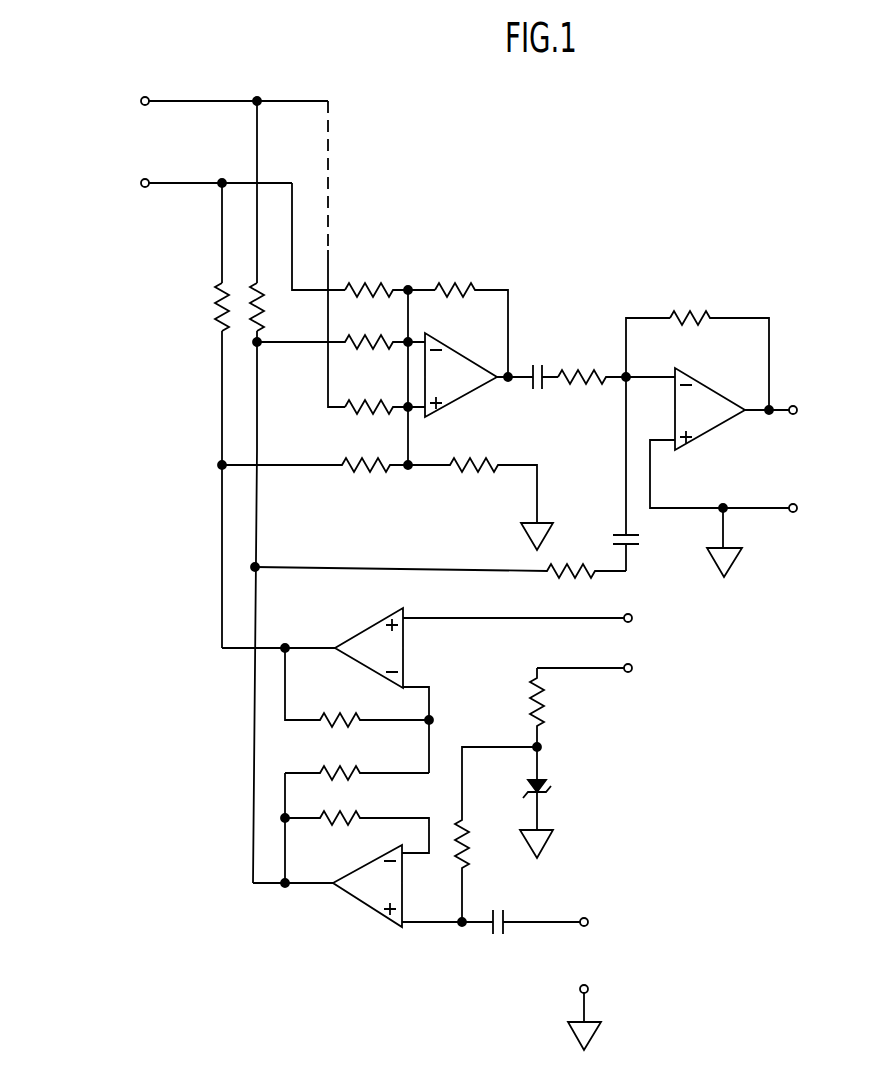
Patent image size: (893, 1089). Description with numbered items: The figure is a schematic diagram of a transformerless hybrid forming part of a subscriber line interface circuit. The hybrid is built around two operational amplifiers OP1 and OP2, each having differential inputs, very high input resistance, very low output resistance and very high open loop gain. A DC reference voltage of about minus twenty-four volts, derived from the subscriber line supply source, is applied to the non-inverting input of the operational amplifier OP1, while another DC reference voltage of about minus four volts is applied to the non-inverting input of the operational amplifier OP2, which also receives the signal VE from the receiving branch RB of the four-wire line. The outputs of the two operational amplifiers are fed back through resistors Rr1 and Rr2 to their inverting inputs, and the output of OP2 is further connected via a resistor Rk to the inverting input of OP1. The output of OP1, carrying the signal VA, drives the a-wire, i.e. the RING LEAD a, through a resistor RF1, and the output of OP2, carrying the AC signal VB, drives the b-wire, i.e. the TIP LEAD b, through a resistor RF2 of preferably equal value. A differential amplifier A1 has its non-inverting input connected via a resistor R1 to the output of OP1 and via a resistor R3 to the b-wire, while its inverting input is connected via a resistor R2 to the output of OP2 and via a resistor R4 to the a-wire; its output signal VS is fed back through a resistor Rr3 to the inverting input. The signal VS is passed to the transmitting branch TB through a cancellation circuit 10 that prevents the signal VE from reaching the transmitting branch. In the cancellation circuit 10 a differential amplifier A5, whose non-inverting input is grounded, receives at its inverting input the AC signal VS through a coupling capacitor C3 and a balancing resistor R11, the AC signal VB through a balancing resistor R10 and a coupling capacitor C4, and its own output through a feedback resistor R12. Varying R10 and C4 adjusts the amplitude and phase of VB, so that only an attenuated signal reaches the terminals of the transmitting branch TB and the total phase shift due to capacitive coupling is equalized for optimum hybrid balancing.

The cancellation circuit 10 is at (708, 404).
The b-wire b is at (135, 100).
The a-wire a is at (135, 181).
The tip lead TIP LEAD is at (189, 98).
The ring lead RING LEAD is at (200, 190).
The resistor RF1 is at (215, 310).
The resistor RF2 is at (262, 302).
The resistor R4 is at (393, 285).
The resistor Rr3 is at (445, 262).
The resistor R2 is at (393, 335).
The resistor R3 is at (393, 398).
The resistor R1 is at (382, 444).
The differential amplifier A1 is at (455, 402).
The coupling capacitor C3 is at (527, 372).
The output signal VS is at (557, 368).
The balancing resistor R11 is at (591, 398).
The feedback resistor R12 is at (687, 317).
The differential amplifier A5 is at (703, 437).
The transmitting branch TB is at (793, 416).
The coupling capacitor C4 is at (639, 541).
The balancing resistor R10 is at (552, 580).
The signal VA is at (221, 518).
The AC signal VB is at (256, 536).
The operational amplifier OP1 is at (361, 632).
The resistor Rr1 is at (361, 704).
The resistor Rk is at (361, 762).
The resistor Rr2 is at (369, 807).
The operational amplifier OP2 is at (373, 909).
The signal VE is at (562, 918).
The receiving branch RB is at (584, 928).